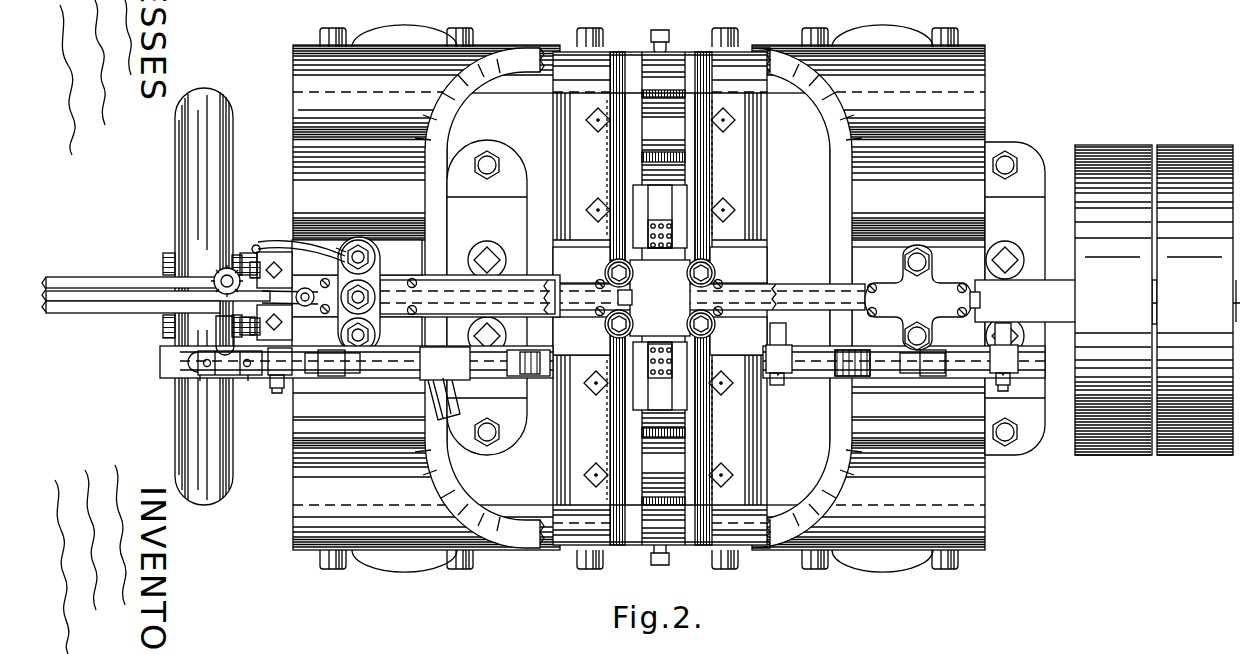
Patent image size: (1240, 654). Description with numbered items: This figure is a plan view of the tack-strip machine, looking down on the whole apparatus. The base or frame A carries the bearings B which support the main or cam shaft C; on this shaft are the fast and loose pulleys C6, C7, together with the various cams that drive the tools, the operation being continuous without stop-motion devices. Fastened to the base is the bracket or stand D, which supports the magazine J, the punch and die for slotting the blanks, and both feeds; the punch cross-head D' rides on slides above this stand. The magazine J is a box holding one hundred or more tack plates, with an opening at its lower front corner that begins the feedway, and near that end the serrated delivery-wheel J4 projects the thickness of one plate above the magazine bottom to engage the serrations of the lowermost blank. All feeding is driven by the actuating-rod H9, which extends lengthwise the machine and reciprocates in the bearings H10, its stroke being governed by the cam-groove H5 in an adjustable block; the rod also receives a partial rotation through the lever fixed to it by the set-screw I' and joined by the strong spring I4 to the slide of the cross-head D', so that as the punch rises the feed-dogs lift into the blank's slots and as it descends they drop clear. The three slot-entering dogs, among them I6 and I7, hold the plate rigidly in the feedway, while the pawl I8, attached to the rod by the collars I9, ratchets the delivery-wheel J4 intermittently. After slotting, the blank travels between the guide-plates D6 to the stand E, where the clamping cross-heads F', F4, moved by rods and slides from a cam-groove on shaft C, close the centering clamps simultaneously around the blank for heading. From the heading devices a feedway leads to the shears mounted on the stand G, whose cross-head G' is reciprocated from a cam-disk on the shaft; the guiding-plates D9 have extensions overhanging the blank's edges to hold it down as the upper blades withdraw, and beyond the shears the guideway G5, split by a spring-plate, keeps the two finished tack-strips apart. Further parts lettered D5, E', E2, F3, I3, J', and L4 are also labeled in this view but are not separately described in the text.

The base or frame A is at (518, 508).
The bearings B is at (746, 297).
The main or cam shaft C is at (206, 420).
The fast pulley C6 is at (1113, 300).
The loose pulley C7 is at (1195, 300).
The bracket or stand D is at (426, 297).
The punch cross-head D' is at (357, 295).
The guide block D5 is at (292, 326).
The guide-plates D6 is at (426, 296).
The guiding-plates D9 is at (709, 297).
The stand E is at (660, 298).
The bolt E' is at (639, 294).
The coil E2 is at (661, 300).
The cross-head F' is at (660, 298).
The winding F3 is at (660, 298).
The cross-head F4 is at (660, 297).
The stand G is at (885, 297).
The cross-head G' is at (918, 297).
The guideway G5 is at (1105, 302).
The cam-groove H5 is at (836, 378).
The actuating-rod or feed-rod H9 is at (406, 370).
The bearings H10 is at (938, 376).
The set-screw I' is at (277, 381).
The pin I3 is at (225, 335).
The spring I4 is at (262, 240).
The feed-dog I6 is at (790, 374).
The feed-dog I7 is at (1014, 360).
The feed dog or pawl I8 is at (602, 362).
The collars I9 is at (248, 376).
The magazine J is at (156, 295).
The link J' is at (290, 296).
The delivery-wheel J4 is at (220, 270).
The lever L4 is at (342, 246).